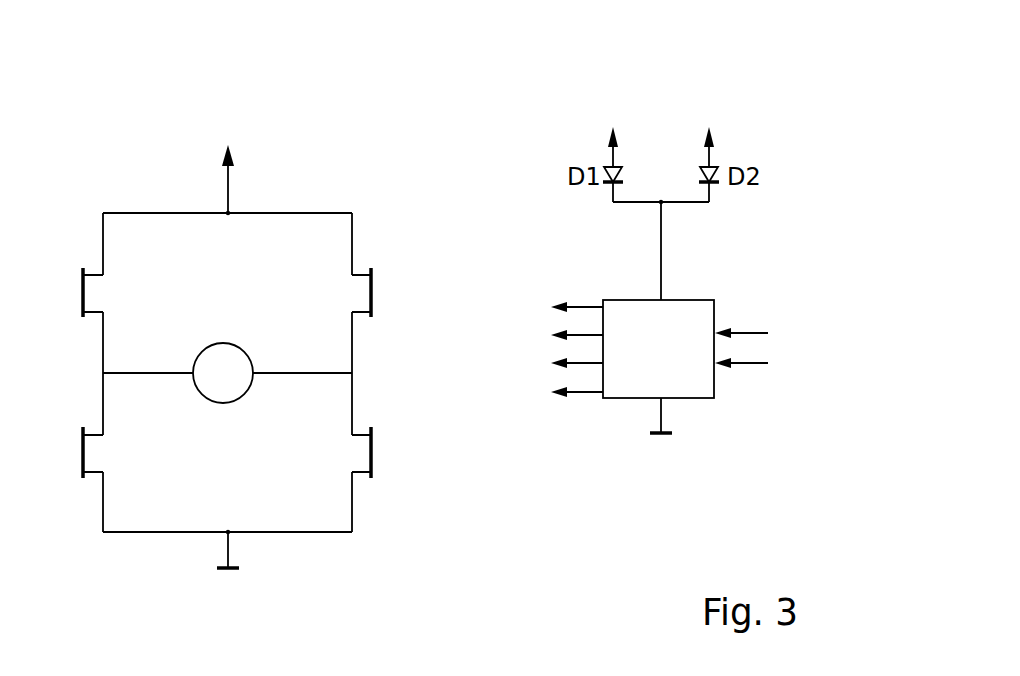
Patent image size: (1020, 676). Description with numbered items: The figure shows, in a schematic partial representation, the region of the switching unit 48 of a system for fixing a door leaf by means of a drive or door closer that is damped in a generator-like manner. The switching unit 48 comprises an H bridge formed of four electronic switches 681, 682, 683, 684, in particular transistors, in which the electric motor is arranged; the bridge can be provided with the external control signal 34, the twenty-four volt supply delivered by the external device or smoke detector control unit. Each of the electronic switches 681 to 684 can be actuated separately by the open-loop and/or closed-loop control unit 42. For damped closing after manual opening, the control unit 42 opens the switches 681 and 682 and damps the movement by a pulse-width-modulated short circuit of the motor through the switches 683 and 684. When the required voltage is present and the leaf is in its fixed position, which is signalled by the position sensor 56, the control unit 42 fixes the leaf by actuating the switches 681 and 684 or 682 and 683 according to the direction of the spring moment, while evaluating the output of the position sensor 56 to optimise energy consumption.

The switching unit 48 is at (326, 181).
The electronic switch 681 is at (82, 292).
The electronic switch 682 is at (371, 292).
The electronic switch 683 is at (82, 453).
The electronic switch 684 is at (371, 453).
The external control signal 34 is at (229, 187).
The open-loop and/or closed-loop control unit 42 is at (672, 362).
The position sensor 56 is at (788, 350).